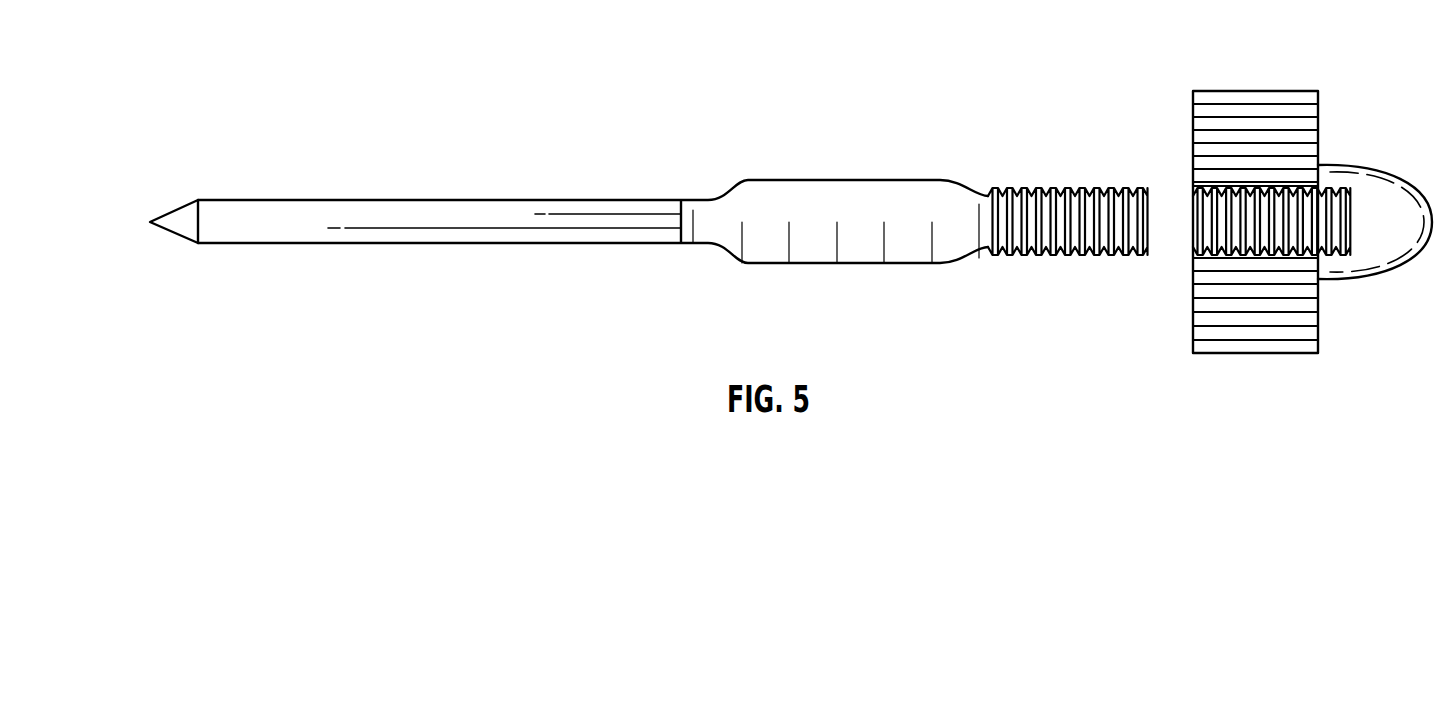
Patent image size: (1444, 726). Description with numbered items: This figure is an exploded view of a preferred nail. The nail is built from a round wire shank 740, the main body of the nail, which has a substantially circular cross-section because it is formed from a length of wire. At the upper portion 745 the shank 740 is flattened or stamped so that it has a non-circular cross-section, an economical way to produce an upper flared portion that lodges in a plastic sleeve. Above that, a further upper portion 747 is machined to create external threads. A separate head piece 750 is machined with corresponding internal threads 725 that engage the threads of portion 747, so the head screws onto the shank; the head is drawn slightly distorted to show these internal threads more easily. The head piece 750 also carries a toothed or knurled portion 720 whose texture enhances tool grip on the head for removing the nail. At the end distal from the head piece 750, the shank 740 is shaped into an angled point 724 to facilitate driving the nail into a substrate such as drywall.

The toothed or knurled portion 720 is at (1256, 88).
The pointed tip 724 is at (183, 207).
The internal threads 725 is at (1193, 237).
The round wire shank 740 is at (466, 194).
The upper portion 745 is at (825, 252).
The further upper portion 747 is at (1058, 193).
The head piece 750 is at (1348, 163).